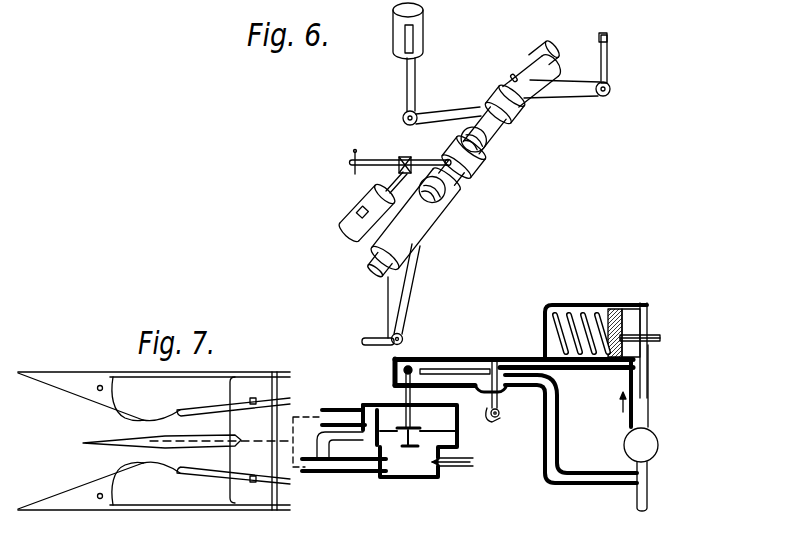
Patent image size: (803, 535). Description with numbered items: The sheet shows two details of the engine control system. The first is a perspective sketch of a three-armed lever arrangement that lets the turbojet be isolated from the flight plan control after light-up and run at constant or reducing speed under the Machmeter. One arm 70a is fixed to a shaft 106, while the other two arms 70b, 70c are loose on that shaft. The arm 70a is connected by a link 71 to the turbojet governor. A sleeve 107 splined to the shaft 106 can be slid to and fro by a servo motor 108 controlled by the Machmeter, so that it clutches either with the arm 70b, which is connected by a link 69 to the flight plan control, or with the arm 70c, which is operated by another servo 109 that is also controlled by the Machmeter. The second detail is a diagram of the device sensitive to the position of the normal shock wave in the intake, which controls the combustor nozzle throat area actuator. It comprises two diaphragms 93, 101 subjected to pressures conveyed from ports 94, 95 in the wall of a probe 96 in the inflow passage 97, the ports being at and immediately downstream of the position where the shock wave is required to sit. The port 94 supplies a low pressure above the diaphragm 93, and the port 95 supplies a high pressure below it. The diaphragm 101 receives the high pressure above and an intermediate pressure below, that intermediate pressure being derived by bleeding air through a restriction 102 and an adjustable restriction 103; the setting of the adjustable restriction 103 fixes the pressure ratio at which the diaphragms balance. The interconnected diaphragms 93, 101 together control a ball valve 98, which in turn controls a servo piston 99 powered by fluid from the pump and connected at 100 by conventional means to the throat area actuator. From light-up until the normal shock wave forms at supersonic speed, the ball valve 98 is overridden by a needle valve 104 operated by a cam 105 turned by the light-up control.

In FIG. 6, the link 69 is at (368, 339).
In FIG. 6, the arm 70a is at (562, 94).
In FIG. 6, the arm 70b is at (400, 291).
In FIG. 6, the arm 70c is at (403, 118).
In FIG. 6, the link 71 is at (608, 36).
In FIG. 7, the diaphragm 93 is at (378, 405).
In FIG. 7, the port 94 is at (150, 437).
In FIG. 7, the port 95 is at (163, 463).
In FIG. 7, the probe 96 is at (190, 437).
In FIG. 7, the inflow passage 97 is at (178, 455).
In FIG. 7, the ball valve 98 is at (412, 368).
In FIG. 7, the servo piston 99 is at (612, 318).
In FIG. 7, the connection 100 is at (650, 335).
In FIG. 7, the diaphragm 101 is at (392, 455).
In FIG. 7, the restriction 102 is at (362, 470).
In FIG. 7, the adjustable restriction 103 is at (440, 468).
In FIG. 7, the needle valve 104 is at (497, 360).
In FIG. 7, the cam 105 is at (499, 415).
In FIG. 6, the shaft 106 is at (546, 46).
In FIG. 6, the sleeve 107 is at (472, 168).
In FIG. 6, the servo motor 108 is at (346, 226).
In FIG. 6, the servo 109 is at (422, 26).